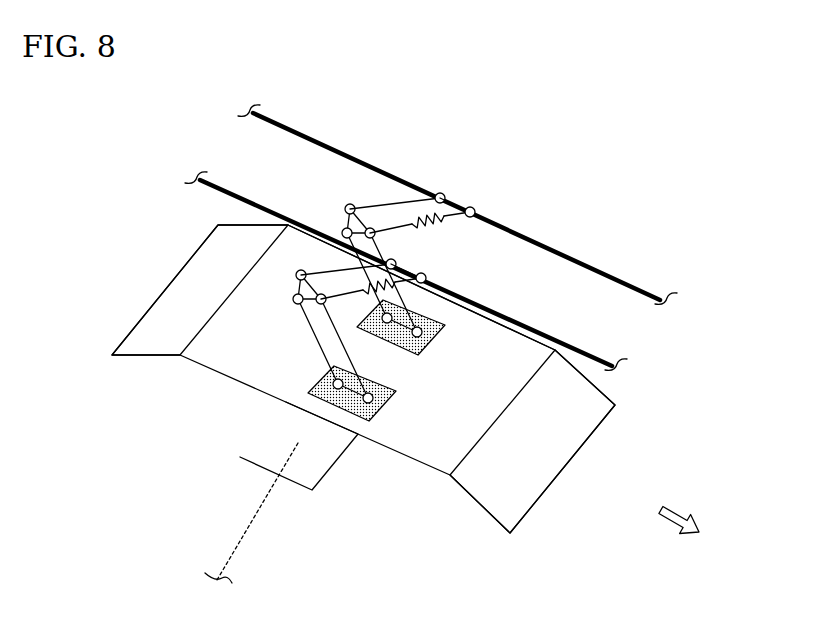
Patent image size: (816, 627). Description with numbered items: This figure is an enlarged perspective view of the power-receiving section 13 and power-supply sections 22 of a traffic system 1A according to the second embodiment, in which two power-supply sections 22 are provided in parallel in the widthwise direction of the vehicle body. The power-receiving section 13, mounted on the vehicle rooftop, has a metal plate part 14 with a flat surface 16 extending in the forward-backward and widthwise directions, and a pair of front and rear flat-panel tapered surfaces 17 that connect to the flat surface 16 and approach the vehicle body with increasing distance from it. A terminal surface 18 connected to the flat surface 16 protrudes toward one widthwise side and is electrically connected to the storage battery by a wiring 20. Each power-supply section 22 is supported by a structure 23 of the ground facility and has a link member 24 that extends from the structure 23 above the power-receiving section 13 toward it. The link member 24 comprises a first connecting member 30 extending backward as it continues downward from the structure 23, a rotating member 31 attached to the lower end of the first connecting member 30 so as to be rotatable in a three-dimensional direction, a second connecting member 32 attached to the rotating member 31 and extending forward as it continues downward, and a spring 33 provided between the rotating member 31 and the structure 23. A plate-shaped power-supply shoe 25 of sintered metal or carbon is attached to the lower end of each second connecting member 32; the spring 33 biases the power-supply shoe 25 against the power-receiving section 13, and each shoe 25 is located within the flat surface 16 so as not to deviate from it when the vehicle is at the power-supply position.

The traffic system 1A is at (634, 151).
The power-receiving section 13 is at (550, 524).
The plate part 14 is at (717, 330).
The flat surface 16 is at (503, 360).
The tapered surfaces 17 is at (167, 326).
The terminal surface 18 is at (295, 470).
The wiring 20 is at (233, 553).
The power-supply section 22 is at (268, 168).
The structure 23 is at (557, 250).
The link member 24 is at (385, 110).
The power-supply shoe 25 is at (424, 337).
The first connecting member 30 is at (398, 205).
The rotating member 31 is at (354, 205).
The second connecting member 32 is at (426, 281).
The spring 33 is at (452, 209).